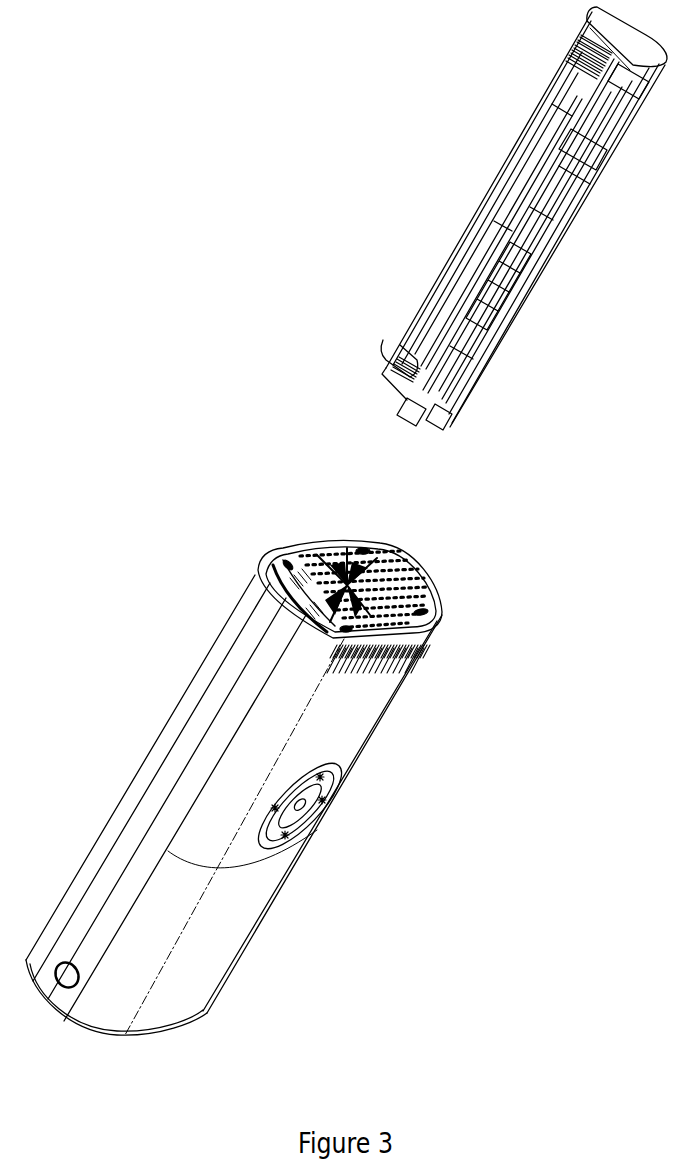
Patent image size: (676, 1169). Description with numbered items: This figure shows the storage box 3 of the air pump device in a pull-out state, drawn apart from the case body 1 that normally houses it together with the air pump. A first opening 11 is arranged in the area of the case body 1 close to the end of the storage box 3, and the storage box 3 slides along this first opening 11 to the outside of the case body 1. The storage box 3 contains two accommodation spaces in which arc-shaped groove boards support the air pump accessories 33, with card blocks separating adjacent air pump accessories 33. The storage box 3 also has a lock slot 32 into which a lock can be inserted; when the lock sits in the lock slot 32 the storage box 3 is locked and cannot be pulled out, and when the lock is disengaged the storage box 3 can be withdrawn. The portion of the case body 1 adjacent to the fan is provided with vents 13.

The case body 1 is at (204, 653).
The storage box 3 is at (398, 348).
The first opening 11 is at (288, 554).
The vents 13 is at (320, 562).
The lock slot 32 is at (400, 413).
The air pump accessories 33 is at (503, 216).